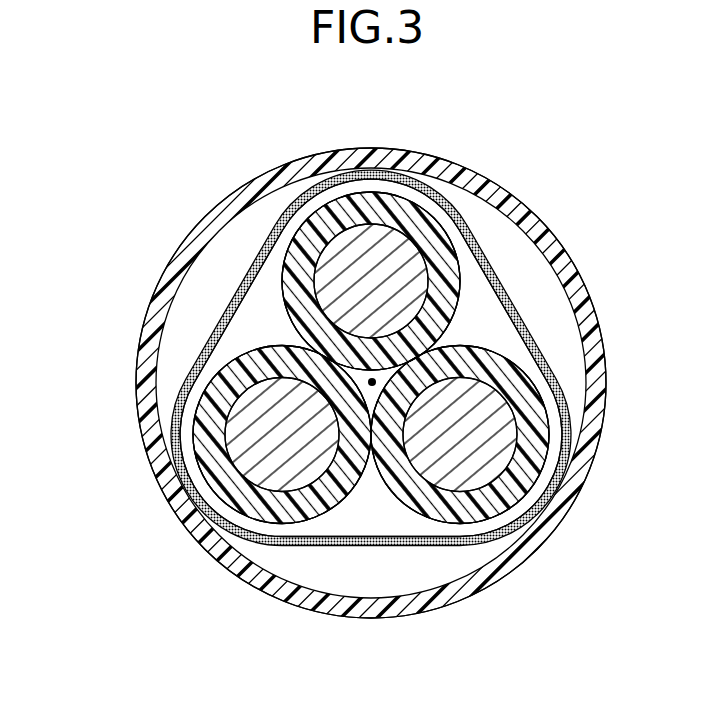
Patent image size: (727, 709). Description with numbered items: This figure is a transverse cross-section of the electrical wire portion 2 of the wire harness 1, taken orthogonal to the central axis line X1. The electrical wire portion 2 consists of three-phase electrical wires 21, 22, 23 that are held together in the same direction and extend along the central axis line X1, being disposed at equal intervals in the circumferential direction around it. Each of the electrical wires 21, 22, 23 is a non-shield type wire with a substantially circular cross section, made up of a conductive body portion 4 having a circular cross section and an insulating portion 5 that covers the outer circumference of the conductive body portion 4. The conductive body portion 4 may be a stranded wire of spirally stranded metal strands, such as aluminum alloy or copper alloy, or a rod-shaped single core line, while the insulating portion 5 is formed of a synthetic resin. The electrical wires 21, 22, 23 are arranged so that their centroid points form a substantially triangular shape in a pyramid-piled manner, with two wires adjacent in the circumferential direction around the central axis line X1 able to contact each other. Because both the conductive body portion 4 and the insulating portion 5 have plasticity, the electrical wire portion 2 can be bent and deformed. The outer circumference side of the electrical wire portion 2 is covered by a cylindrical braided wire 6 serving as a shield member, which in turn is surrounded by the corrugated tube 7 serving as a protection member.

The wire harness 1 is at (125, 133).
The electrical wire portion 2 is at (477, 300).
The conductive body portion 4 is at (352, 240).
The insulating portion 5 is at (307, 247).
The braided wire 6 is at (310, 546).
The corrugated tube 7 is at (603, 446).
The electrical wire 21 is at (87, 432).
The electrical wire 22 is at (295, 108).
The electrical wire 23 is at (623, 518).
The central axis line X1 is at (376, 383).